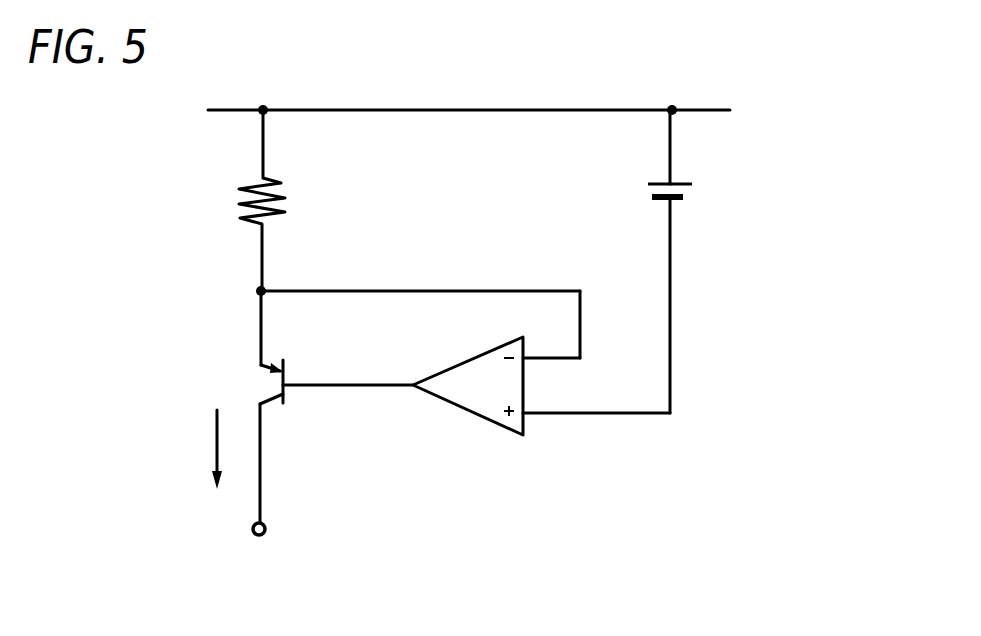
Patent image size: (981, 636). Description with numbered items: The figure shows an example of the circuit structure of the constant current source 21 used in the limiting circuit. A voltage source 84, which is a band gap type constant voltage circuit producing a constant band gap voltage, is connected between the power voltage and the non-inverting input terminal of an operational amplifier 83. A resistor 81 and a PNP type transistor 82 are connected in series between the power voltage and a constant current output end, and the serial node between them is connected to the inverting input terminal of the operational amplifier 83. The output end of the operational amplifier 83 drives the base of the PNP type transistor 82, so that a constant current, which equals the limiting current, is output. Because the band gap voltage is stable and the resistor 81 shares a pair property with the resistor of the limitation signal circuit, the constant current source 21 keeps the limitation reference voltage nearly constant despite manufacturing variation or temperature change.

The constant current source 21 is at (150, 191).
The resistor 81 is at (279, 197).
The PNP type transistor 82 is at (264, 399).
The operational amplifier 83 is at (468, 412).
The voltage source 84 is at (697, 193).